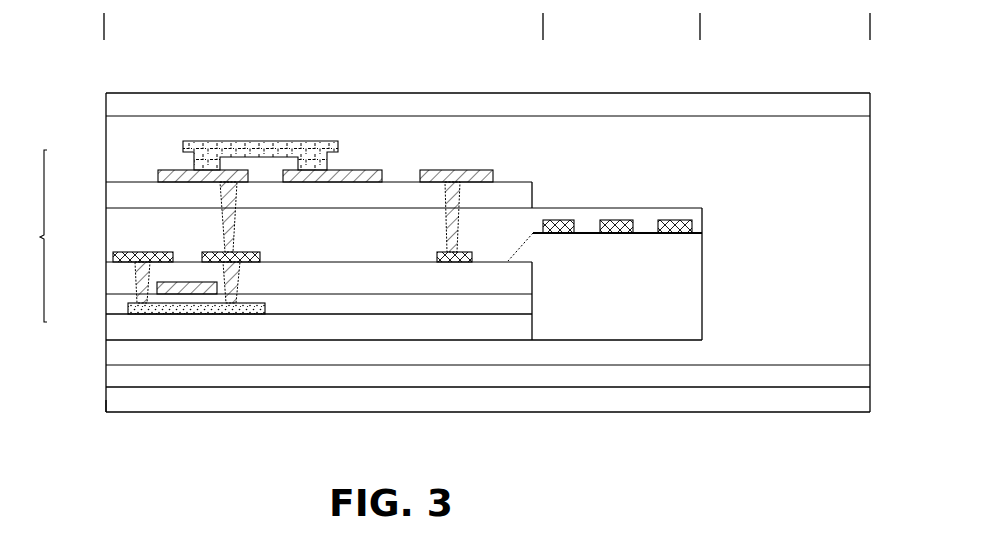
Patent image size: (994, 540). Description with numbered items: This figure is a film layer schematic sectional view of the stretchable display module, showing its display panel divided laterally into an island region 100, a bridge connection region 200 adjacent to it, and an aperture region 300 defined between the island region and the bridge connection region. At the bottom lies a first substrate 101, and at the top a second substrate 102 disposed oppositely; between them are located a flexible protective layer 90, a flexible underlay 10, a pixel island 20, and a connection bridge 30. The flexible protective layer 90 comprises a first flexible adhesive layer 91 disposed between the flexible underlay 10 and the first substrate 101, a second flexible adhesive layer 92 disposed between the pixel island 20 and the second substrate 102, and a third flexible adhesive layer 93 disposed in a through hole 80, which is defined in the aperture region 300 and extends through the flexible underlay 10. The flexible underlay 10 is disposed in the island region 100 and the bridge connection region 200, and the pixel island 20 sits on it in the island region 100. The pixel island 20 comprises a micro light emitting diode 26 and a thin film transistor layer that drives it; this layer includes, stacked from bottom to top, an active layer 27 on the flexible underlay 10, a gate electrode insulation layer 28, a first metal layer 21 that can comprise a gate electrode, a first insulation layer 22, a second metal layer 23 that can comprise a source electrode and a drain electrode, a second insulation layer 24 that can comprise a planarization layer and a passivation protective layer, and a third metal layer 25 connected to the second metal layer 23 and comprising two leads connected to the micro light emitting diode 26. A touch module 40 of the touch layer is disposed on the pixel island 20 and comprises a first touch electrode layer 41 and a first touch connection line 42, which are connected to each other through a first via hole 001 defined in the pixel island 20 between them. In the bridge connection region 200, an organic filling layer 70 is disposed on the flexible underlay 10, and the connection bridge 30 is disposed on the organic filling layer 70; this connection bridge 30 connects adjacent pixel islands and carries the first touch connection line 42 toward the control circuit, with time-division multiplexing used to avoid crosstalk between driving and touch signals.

The island region 100 is at (537, 25).
The bridge connection region 200 is at (694, 25).
The aperture region 300 is at (706, 25).
The through hole 80 is at (860, 272).
The second substrate 102 is at (104, 110).
The flexible protective layer 90 is at (104, 133).
The second flexible adhesive layer 92 is at (232, 130).
The third flexible adhesive layer 93 is at (781, 283).
The first flexible adhesive layer 91 is at (360, 375).
The flexible underlay 10 is at (104, 353).
The first substrate 101 is at (104, 405).
The pixel island 20 is at (32, 236).
The second insulation layer 24 is at (104, 226).
The first insulation layer 22 is at (104, 269).
The gate electrode insulation layer 28 is at (104, 300).
The micro light emitting diode 26 is at (181, 147).
The third metal layer 25 is at (156, 176).
The second metal layer 23 is at (111, 258).
The first metal layer 21 is at (155, 287).
The active layer 27 is at (126, 308).
The touch module 40 is at (368, 71).
The first touch electrode layer 41 is at (444, 166).
The first touch connection line 42 is at (436, 249).
The first via hole 001 is at (462, 226).
The organic filling layer 70 is at (648, 318).
The connection bridge 30 is at (617, 217).